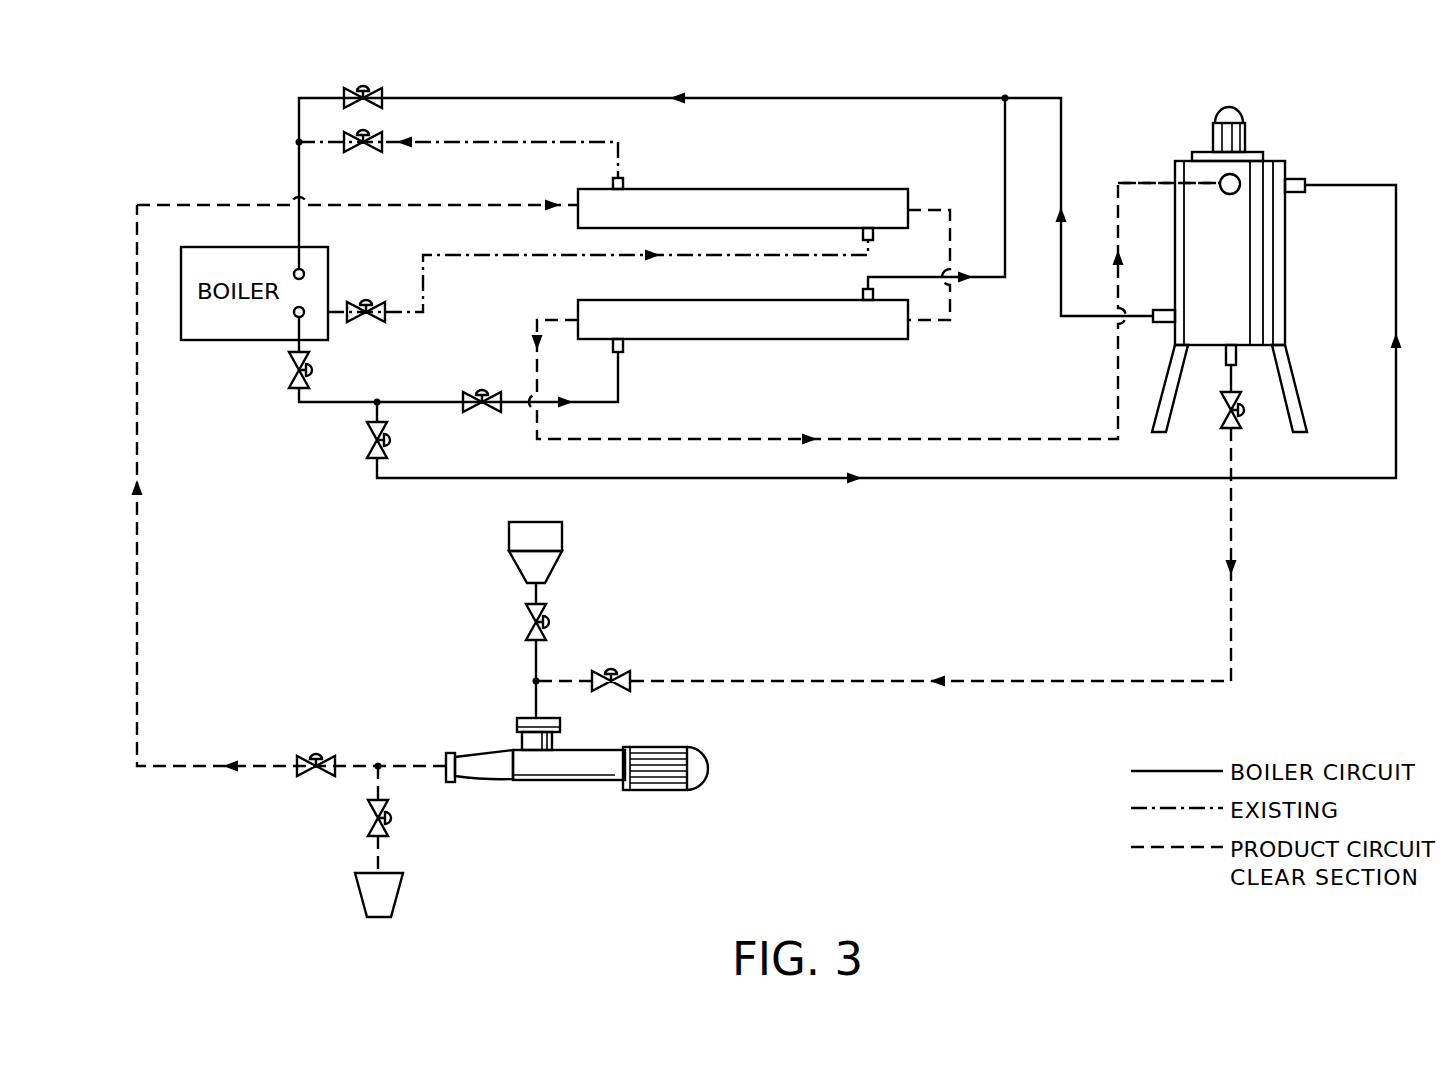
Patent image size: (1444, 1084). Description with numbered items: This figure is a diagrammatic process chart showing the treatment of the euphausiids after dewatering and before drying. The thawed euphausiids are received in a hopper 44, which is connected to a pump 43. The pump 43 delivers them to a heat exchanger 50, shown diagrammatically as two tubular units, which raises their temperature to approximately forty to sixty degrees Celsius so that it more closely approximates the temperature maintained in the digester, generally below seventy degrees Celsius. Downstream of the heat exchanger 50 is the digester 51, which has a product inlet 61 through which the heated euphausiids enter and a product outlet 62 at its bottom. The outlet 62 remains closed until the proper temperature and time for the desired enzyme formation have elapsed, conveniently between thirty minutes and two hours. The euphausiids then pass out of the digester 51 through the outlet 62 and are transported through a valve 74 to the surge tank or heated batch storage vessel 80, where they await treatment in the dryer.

The pump 43 is at (567, 782).
The hopper 44 is at (562, 537).
The heat exchanger 50 is at (813, 168).
The digester 51 is at (1302, 298).
The product inlet 61 is at (1128, 181).
The product outlet 62 is at (1238, 353).
The valve 74 is at (616, 691).
The surge tank or heated batch storage vessel 80 is at (404, 897).